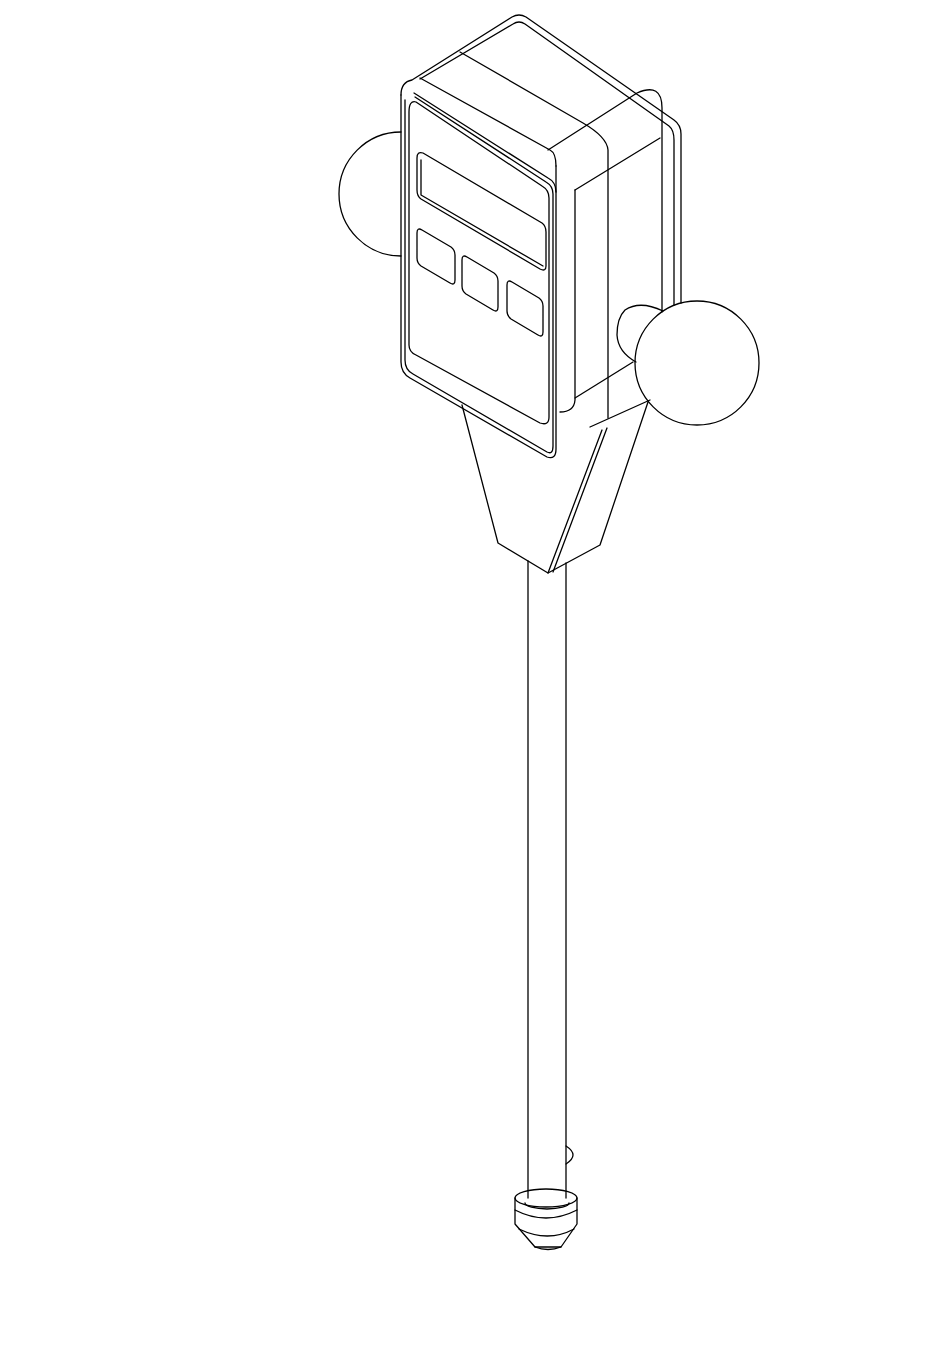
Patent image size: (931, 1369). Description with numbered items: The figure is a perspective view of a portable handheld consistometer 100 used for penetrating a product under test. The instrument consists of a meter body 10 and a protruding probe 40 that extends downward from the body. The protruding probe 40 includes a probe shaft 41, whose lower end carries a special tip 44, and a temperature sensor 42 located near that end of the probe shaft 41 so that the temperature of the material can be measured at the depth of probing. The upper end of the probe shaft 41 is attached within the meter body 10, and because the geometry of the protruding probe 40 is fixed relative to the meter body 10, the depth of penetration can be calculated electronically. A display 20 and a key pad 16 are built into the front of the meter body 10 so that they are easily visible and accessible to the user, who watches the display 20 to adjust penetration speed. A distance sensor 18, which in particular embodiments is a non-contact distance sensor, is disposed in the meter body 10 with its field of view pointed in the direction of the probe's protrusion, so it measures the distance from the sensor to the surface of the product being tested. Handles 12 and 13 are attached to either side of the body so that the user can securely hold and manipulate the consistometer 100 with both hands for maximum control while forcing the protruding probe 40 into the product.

The handheld consistometer 100 is at (150, 155).
The meter body 10 is at (322, 18).
The handle 12 is at (748, 329).
The handle 13 is at (372, 170).
The key pad 16 is at (469, 297).
The distance sensor 18 is at (492, 426).
The display 20 is at (470, 206).
The protruding probe 40 is at (463, 563).
The probe shaft 41 is at (595, 658).
The temperature sensor 42 is at (578, 1153).
The special tip 44 is at (557, 1226).